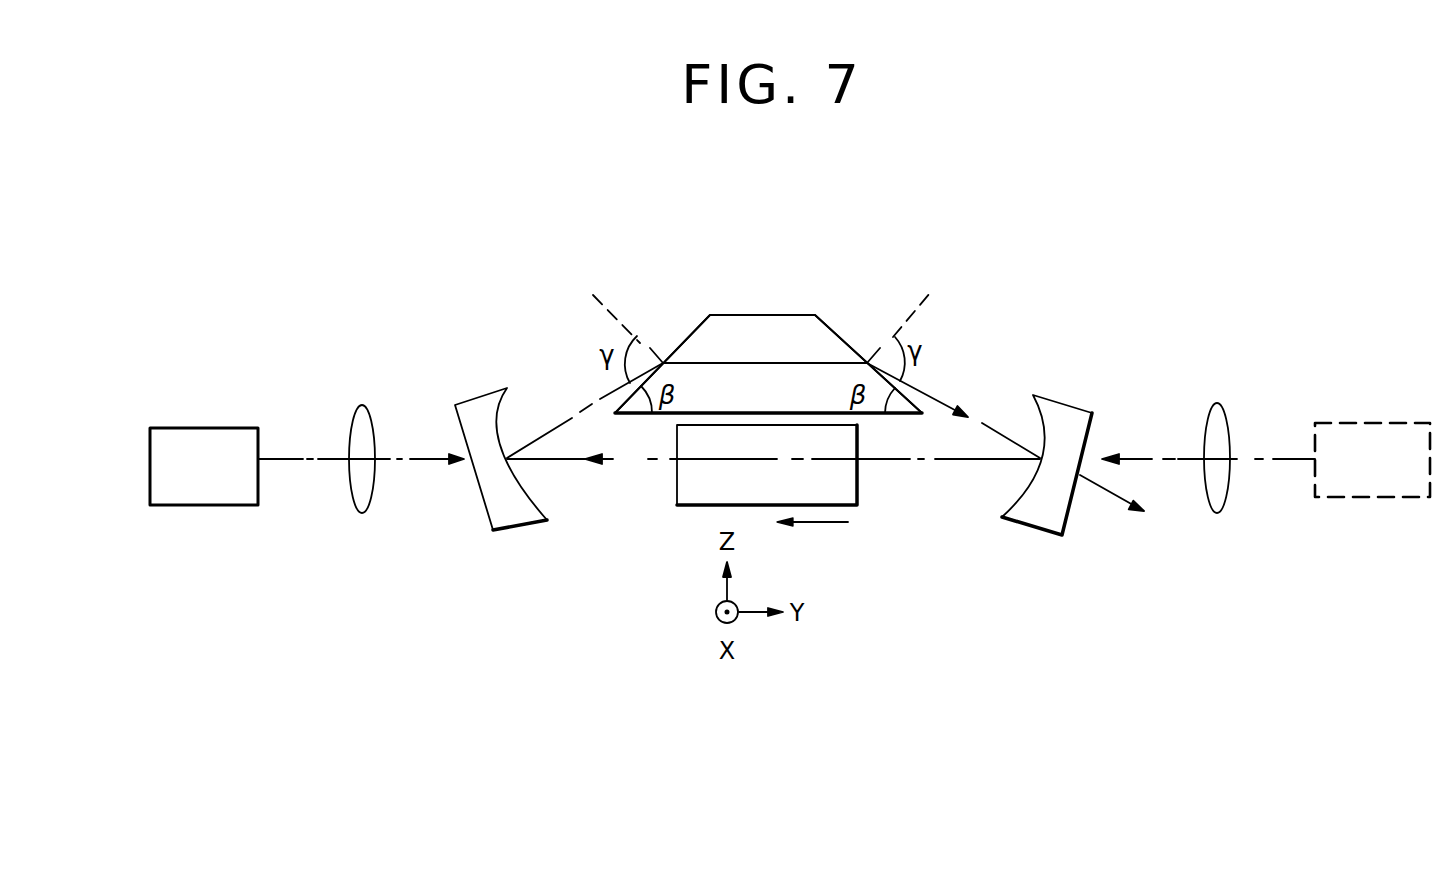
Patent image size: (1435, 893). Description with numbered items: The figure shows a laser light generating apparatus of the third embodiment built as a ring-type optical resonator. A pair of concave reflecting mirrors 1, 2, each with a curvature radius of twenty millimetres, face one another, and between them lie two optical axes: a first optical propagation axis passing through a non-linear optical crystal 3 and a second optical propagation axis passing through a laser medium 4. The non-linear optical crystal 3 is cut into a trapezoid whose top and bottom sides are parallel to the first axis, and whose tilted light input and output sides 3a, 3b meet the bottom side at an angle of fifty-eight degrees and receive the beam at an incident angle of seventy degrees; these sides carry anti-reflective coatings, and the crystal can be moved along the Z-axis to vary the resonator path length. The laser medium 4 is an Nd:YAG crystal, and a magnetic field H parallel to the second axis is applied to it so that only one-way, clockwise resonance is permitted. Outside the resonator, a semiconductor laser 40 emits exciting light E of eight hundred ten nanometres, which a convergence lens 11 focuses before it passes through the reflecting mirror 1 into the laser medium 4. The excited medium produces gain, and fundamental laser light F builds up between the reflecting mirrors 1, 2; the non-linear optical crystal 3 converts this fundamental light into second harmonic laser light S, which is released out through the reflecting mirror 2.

The semiconductor laser 40 is at (207, 452).
The convergence lens 11 is at (358, 428).
The reflecting mirror 1 is at (477, 413).
The reflecting mirror 2 is at (1063, 417).
The non-linear optical crystal 3 is at (768, 323).
The light input and output side 3a is at (686, 343).
The light input and output side 3b is at (828, 325).
The laser medium 4 is at (832, 475).
The exciting light E is at (413, 462).
The fundamental laser light F is at (628, 463).
The second harmonic laser light S is at (1152, 519).
The magnetic field H is at (812, 542).